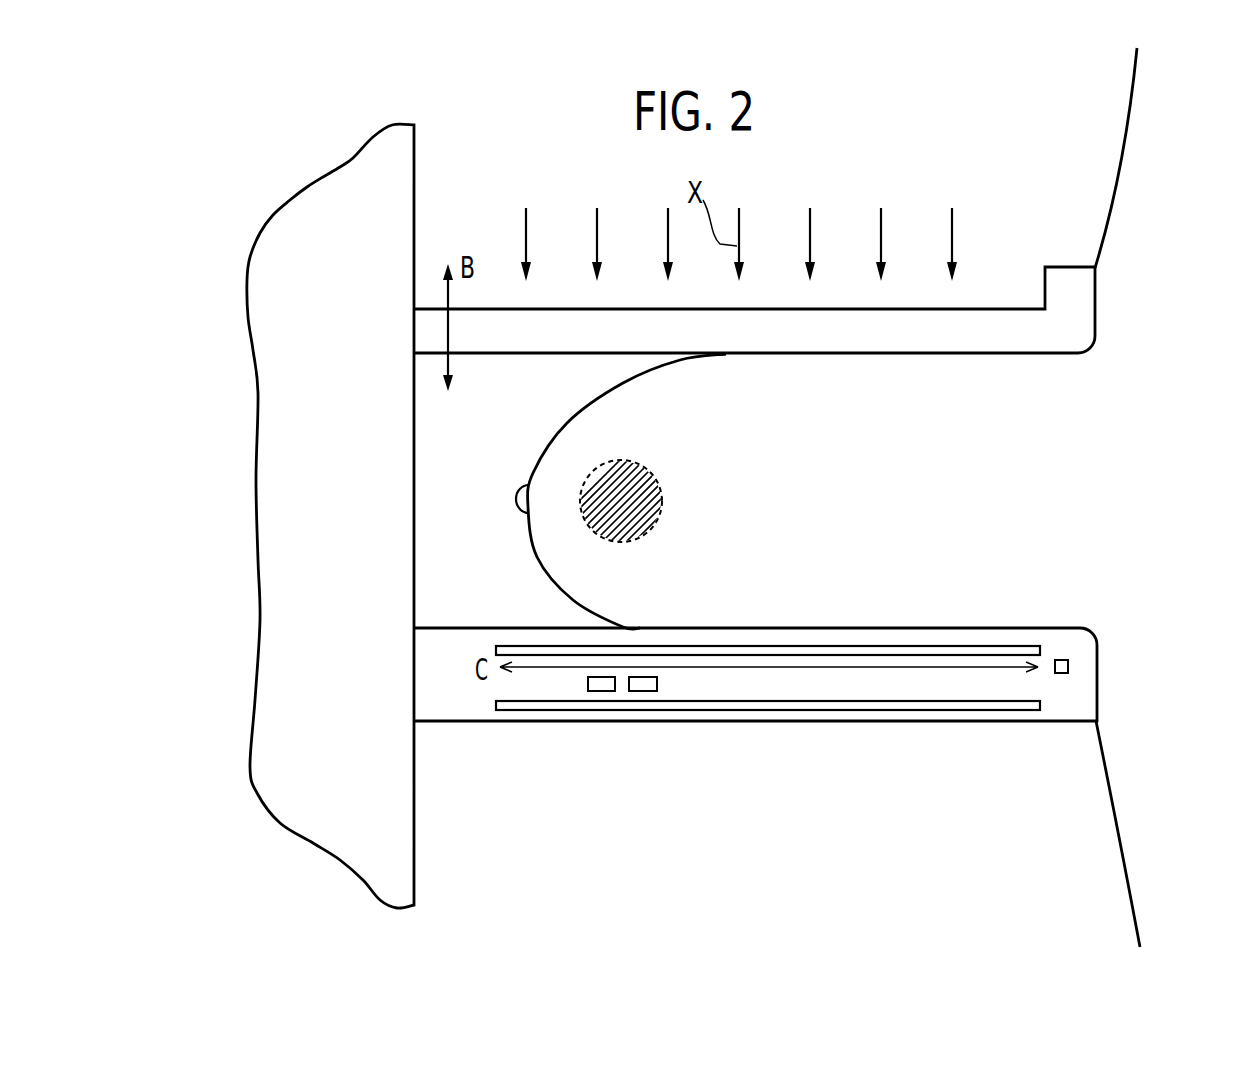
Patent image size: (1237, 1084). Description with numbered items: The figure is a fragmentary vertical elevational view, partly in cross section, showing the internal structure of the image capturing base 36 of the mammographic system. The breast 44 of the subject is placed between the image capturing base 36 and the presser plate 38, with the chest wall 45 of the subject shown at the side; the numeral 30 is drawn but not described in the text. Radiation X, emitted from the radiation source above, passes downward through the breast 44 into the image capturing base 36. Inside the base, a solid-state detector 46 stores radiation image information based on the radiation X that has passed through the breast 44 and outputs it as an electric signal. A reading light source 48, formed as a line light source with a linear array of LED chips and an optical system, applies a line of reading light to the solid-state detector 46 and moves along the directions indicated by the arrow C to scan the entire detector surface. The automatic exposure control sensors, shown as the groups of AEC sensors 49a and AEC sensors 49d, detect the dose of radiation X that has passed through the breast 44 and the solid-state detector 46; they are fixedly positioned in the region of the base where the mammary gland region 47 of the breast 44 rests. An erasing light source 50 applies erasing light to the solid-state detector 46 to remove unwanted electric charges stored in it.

The main body 30 is at (273, 498).
The image capturing base 36 is at (1008, 760).
The presser plate 38 is at (1062, 288).
The breast 44 is at (563, 452).
The chest wall 45 is at (1120, 167).
The solid-state detector 46 is at (695, 652).
The mammary gland region 47 is at (662, 506).
The reading light source 48 is at (1065, 658).
The AEC sensor 49a is at (642, 692).
The AEC sensor 49d is at (602, 692).
The erasing light source 50 is at (825, 703).